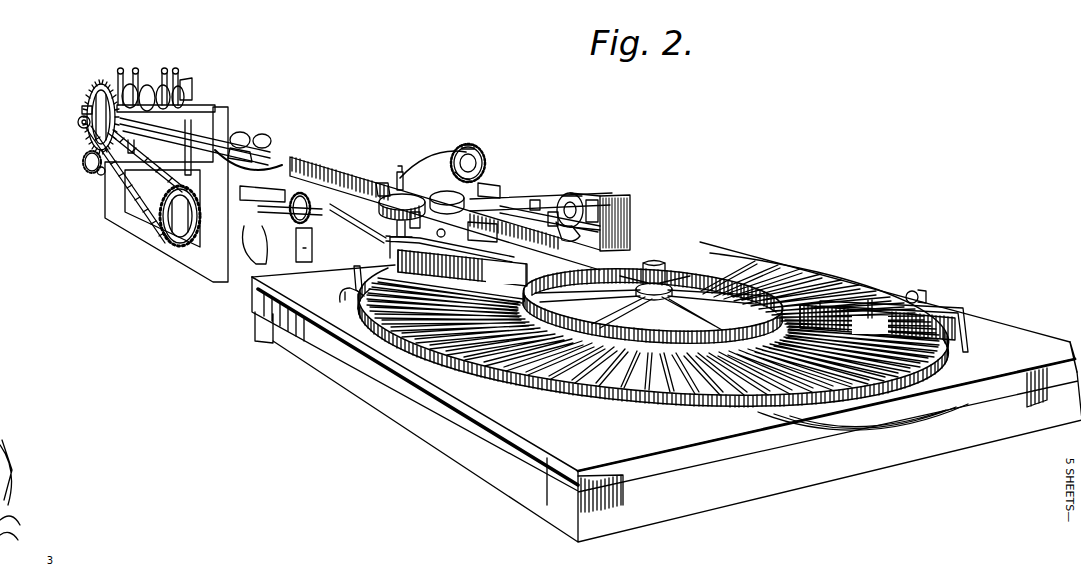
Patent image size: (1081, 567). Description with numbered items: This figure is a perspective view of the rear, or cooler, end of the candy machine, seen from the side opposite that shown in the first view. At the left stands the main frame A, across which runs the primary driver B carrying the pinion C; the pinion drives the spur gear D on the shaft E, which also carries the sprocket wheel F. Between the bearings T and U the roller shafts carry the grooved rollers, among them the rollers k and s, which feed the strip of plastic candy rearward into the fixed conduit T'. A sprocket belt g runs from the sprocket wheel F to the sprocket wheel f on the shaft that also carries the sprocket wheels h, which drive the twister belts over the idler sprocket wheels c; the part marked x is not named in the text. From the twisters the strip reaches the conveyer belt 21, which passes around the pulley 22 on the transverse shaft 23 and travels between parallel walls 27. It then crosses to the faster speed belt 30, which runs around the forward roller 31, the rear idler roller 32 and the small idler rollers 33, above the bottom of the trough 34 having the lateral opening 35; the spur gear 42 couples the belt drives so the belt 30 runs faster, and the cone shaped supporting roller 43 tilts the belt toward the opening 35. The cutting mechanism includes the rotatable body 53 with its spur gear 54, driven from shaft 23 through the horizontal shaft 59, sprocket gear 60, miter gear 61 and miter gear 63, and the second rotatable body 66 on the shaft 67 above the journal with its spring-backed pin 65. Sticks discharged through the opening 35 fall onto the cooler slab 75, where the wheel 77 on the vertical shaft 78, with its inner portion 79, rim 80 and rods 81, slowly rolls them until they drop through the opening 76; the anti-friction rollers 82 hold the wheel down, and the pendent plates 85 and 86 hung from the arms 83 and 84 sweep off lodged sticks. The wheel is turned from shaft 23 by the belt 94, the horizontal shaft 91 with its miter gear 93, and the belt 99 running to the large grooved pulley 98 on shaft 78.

The main frame A is at (208, 257).
The primary driver B is at (83, 163).
The pinion C is at (98, 174).
The spur gear D is at (101, 84).
The shaft E is at (78, 121).
The sprocket wheel F is at (84, 112).
The bearing T is at (137, 74).
The bearing U is at (176, 68).
The fixed conduit T' is at (192, 82).
The roller s is at (192, 80).
The cam x is at (208, 146).
The roller k is at (201, 146).
The sprocket belt g is at (137, 200).
The sprocket wheel f is at (171, 228).
The sprocket wheel h is at (280, 245).
The idler sprocket wheel c is at (290, 208).
The transverse shaft 23 is at (262, 194).
The conveyer belt 21 is at (392, 203).
The pulley 22 is at (358, 225).
The parallel walls 27 is at (340, 178).
The spring-backed pin 65 is at (379, 192).
The rotatable body 66 is at (398, 222).
The shaft 67 is at (400, 170).
The miter gear 63 is at (442, 170).
The horizontal shaft 59 is at (466, 146).
The sprocket gear 60 is at (474, 147).
The miter gear 61 is at (458, 156).
The spur gear 54 is at (488, 186).
The forward roller 31 is at (415, 225).
The body 53 is at (447, 214).
The trough 34 is at (513, 231).
The lateral opening 35 is at (520, 204).
The belt 30 is at (548, 208).
The belt 94 is at (538, 200).
The cone shaped supporting roller 43 is at (553, 212).
The idler rollers 33 is at (566, 222).
The horizontal shaft 91 is at (574, 203).
The rear idler roller 32 is at (590, 212).
The spur gear 42 is at (592, 200).
The miter gear 93 is at (616, 205).
The opening 76 is at (645, 256).
The vertical shaft 78 is at (666, 282).
The inner portion 79 is at (572, 316).
The wheel 77 is at (590, 398).
The rim 80 is at (952, 374).
The rods 81 is at (686, 385).
The anti-friction rollers 82 is at (345, 291).
The arm 83 is at (358, 272).
The overhanging arm 84 is at (937, 310).
The pendent plate 85 is at (456, 261).
The pendent plate 86 is at (877, 322).
The slab 75 is at (1002, 330).
The pulley 98 is at (874, 438).
The belt 99 is at (852, 442).